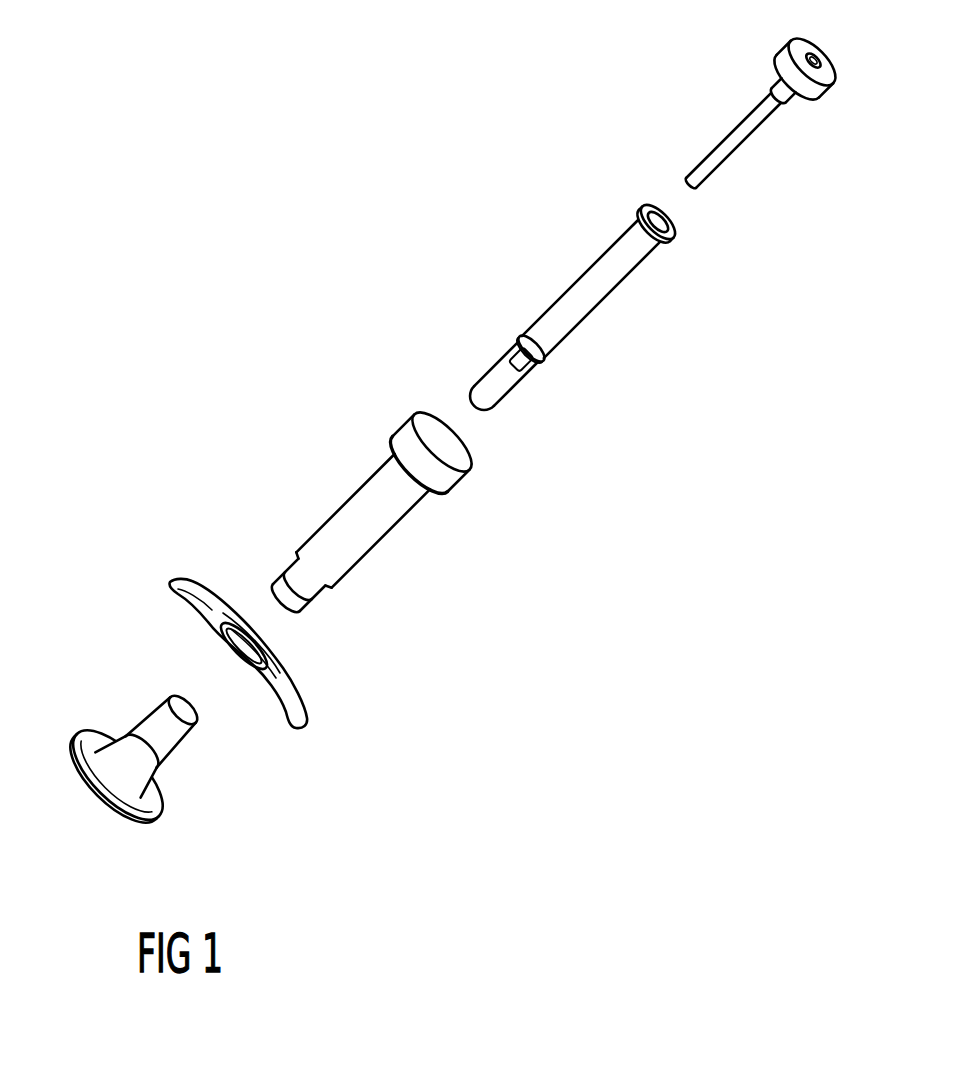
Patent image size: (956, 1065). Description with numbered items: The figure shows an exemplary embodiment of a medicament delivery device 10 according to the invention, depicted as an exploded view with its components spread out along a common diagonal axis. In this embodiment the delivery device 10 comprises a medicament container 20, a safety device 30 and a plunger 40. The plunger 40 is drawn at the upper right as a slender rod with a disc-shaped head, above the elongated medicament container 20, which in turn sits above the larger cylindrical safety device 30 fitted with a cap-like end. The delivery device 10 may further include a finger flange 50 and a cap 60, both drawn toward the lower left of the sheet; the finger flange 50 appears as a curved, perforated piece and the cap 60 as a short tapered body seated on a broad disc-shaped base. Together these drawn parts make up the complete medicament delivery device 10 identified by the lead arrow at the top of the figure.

The medicament delivery device 10 is at (397, 109).
The medicament container 20 is at (577, 305).
The safety device 30 is at (385, 523).
The plunger 40 is at (740, 143).
The finger flange 50 is at (170, 587).
The cap 60 is at (157, 720).